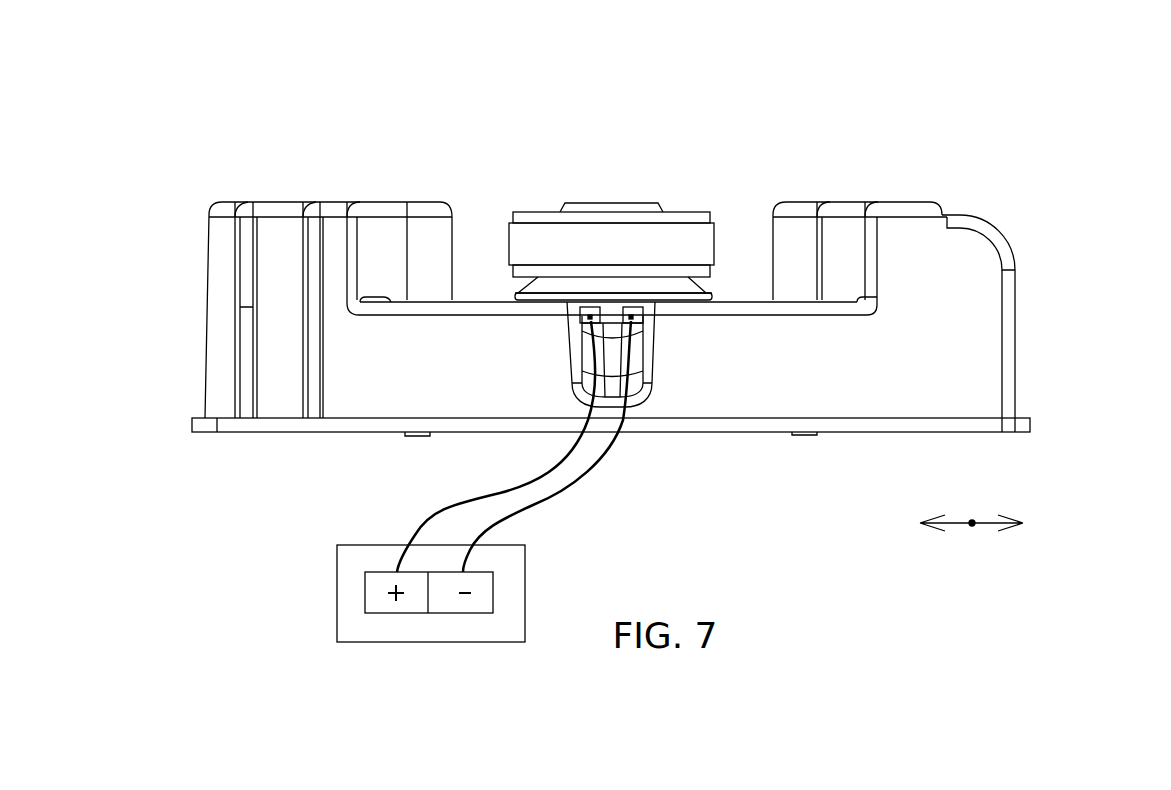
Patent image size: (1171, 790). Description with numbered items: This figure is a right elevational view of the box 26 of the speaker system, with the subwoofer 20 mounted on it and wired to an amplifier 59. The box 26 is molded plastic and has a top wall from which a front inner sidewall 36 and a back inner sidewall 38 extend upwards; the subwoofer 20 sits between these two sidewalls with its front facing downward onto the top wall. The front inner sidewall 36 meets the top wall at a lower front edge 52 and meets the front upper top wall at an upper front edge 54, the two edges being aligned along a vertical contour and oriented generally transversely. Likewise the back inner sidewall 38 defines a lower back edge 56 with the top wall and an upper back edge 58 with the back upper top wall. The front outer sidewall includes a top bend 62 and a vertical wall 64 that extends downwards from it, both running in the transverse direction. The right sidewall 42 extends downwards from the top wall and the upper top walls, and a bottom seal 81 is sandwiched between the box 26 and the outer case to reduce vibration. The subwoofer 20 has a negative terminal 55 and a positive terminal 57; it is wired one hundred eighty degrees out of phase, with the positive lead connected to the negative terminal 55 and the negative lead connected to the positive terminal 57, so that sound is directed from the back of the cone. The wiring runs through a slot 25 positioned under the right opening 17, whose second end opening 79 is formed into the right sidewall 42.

The right opening 17 is at (857, 158).
The subwoofer 20 is at (620, 152).
The slot 25 is at (662, 367).
The box 26 is at (1023, 77).
The front inner sidewall 36 is at (770, 256).
The back inner sidewall 38 is at (453, 253).
The right sidewall 42 is at (966, 391).
The lower front edge 52 is at (877, 302).
The upper front edge 54 is at (773, 204).
The negative terminal 55 is at (578, 311).
The lower back edge 56 is at (352, 316).
The positive terminal 57 is at (643, 312).
The upper back edge 58 is at (450, 203).
The amplifier 59 is at (372, 650).
The top bend 62 is at (1000, 222).
The vertical wall 64 is at (1017, 325).
The second end opening 79 is at (660, 378).
The bottom seal 81 is at (1030, 425).